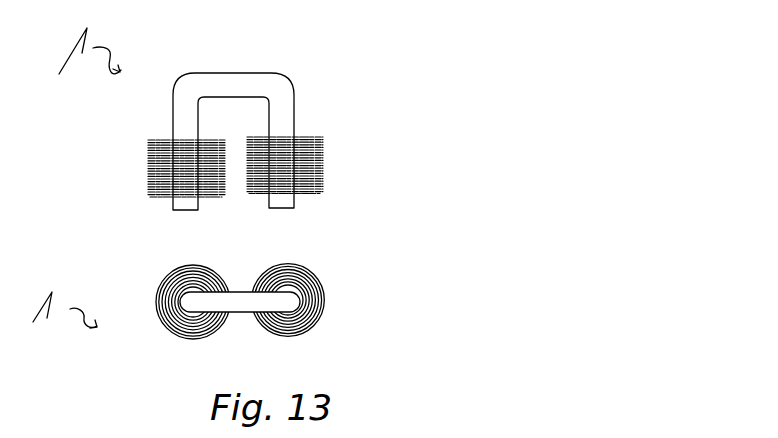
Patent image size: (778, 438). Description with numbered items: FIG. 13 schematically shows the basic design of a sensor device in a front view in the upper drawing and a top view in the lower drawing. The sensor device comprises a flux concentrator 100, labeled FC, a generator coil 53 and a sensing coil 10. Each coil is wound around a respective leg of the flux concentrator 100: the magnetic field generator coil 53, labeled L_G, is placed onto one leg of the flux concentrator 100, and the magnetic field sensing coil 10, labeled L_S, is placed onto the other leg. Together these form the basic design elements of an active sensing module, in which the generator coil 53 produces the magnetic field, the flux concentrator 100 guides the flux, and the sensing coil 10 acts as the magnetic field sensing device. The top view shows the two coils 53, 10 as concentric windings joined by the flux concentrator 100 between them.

The flux concentrator 100 is at (308, 207).
The sensing coil 10 is at (158, 196).
The generator coil 53 is at (314, 190).
The flux concentrator core FC is at (233, 141).